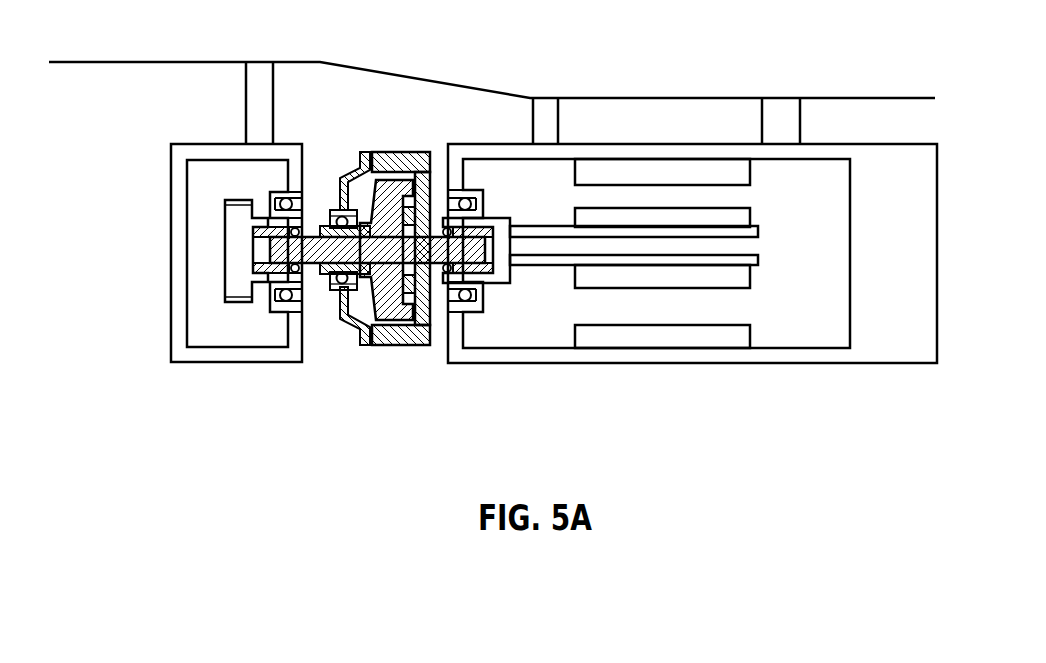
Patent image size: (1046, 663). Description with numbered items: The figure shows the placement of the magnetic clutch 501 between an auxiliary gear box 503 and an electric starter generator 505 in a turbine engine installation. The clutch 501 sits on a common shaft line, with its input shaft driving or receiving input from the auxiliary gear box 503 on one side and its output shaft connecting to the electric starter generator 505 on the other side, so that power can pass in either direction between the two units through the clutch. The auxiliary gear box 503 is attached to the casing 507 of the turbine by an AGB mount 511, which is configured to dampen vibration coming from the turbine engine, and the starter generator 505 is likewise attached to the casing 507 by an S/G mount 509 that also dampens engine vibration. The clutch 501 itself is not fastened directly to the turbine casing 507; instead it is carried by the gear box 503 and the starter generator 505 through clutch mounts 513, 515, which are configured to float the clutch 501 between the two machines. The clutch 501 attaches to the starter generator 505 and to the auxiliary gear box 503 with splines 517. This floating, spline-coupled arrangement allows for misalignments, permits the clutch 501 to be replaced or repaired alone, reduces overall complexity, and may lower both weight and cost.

The magnetic clutch 501 is at (393, 347).
The auxiliary gear box 503 is at (170, 280).
The electric starter generator 505 is at (837, 363).
The casing 507 is at (407, 77).
The S/G mount 509 is at (552, 107).
The AGB mount 511 is at (258, 113).
The clutch mount 513 is at (470, 313).
The clutch mount 515 is at (278, 313).
The splines 517 is at (289, 201).